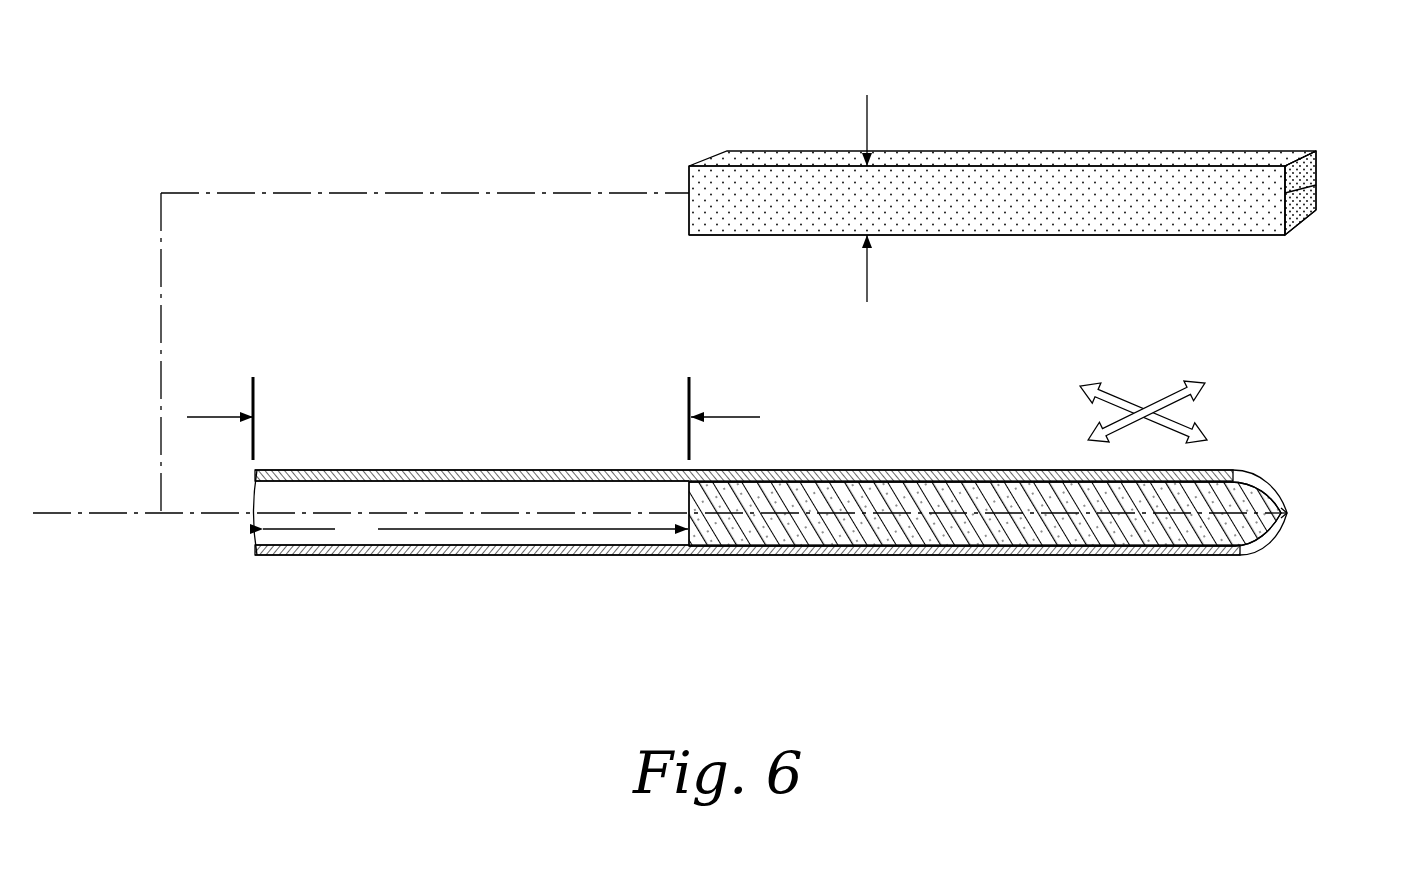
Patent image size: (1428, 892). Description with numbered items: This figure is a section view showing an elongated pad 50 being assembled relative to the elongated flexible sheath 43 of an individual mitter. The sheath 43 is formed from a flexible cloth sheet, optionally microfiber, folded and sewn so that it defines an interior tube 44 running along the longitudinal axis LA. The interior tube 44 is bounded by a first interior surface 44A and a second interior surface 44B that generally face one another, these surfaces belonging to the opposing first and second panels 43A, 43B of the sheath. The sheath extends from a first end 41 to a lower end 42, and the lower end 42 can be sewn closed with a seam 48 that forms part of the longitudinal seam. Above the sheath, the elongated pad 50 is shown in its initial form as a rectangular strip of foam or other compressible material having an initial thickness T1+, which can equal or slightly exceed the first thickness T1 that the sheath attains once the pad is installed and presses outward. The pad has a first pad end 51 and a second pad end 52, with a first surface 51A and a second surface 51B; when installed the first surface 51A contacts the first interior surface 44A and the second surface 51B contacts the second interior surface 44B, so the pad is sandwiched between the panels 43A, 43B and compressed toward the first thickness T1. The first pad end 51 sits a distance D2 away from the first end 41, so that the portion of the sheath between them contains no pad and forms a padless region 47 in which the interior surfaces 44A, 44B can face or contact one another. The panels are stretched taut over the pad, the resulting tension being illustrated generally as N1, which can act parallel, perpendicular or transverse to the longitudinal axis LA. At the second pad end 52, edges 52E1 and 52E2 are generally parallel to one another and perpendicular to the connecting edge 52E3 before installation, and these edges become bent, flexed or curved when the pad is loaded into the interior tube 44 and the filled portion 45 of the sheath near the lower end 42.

The first end of the sheath 41 is at (272, 622).
The lower end of the sheath 42 is at (1268, 552).
The elongated flexible sheath 43 is at (771, 529).
The first panel 43A is at (548, 470).
The second panel 43B is at (617, 556).
The interior tube 44 is at (500, 507).
The first interior surface 44A is at (355, 480).
The second interior surface 44B is at (408, 547).
The filled distal section 45 is at (805, 553).
The padless region 47 is at (475, 530).
The seam 48 is at (1282, 510).
The elongated pad 50 is at (978, 148).
The first pad end 51 is at (688, 183).
The first surface of the elongated pad 51A is at (1058, 158).
The second surface of the elongated pad 51B is at (1068, 237).
The second pad end 52 is at (1293, 151).
The edge 52E1 is at (1266, 168).
The edge 52E2 is at (1283, 237).
The edge 52E3 is at (1316, 185).
The longitudinal axis LA is at (113, 513).
The distance D2 is at (489, 418).
The first thickness T1 is at (880, 186).
The tension or force N1 is at (1144, 411).